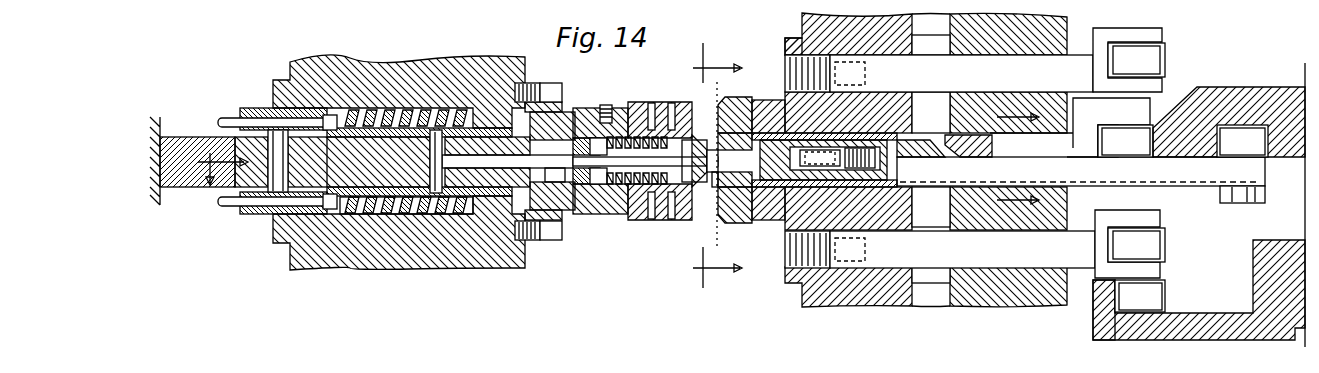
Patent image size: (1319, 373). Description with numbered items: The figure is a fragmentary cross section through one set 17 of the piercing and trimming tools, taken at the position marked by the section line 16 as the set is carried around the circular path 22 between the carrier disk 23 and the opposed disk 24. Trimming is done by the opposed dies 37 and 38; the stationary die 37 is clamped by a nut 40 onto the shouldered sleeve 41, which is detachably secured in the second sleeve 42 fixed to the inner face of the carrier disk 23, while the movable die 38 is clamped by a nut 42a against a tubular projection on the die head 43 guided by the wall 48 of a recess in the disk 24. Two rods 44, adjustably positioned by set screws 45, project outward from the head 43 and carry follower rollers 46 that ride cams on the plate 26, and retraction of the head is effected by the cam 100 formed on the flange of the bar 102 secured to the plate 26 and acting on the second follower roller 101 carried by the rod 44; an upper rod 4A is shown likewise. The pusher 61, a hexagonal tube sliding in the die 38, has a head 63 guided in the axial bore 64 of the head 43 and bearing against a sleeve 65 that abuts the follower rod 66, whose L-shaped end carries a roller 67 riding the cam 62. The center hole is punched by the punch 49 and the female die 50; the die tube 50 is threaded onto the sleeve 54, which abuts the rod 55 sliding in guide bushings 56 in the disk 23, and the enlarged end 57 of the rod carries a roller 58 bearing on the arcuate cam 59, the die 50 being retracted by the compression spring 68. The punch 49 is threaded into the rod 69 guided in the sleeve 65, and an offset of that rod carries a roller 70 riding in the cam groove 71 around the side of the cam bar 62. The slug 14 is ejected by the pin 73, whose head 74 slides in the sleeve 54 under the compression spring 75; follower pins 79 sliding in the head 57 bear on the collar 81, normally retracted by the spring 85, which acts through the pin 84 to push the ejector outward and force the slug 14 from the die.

The slug 14 is at (692, 150).
The section line 16 is at (717, 172).
The set of tools 17 is at (700, 215).
The circular path 22 is at (583, 182).
The carrier disk 23 is at (413, 67).
The disk 24 is at (993, 30).
The plate 26 is at (1305, 72).
The stationary trimming die 37 is at (712, 175).
The movable trimming die 38 is at (715, 190).
The nut 40 is at (668, 102).
The sleeve 41 is at (610, 105).
The second sleeve 42 is at (580, 108).
The nut 42a is at (762, 220).
The die head 43 is at (790, 40).
The rod 44 is at (1078, 231).
The set screw 45 is at (786, 65).
The follower roller 46 is at (1165, 58).
The wall of recess 48 is at (912, 40).
The punch 49 is at (823, 161).
The female die 50 is at (600, 184).
The sleeve 54 is at (556, 140).
The rod 55 is at (492, 137).
The guide bushing 56 is at (278, 108).
The enlarged outer end 57 is at (264, 214).
The roller 58 is at (290, 162).
The arcuate cam 59 is at (207, 137).
The pusher 61 is at (735, 160).
The cam 62 is at (1148, 157).
The head 63 is at (786, 133).
The axial bore 64 is at (828, 148).
The sleeve 65 is at (858, 147).
The follower rod 66 is at (945, 137).
The roller 67 is at (1116, 157).
The compression spring 68 is at (655, 190).
The rod 69 is at (930, 195).
The roller 70 is at (1258, 128).
The cam groove 71 is at (1234, 128).
The ejector pin 73 is at (694, 172).
The head 74 is at (554, 182).
The compression spring 75 is at (536, 190).
The follower pin 79 is at (236, 118).
The collar 81 is at (374, 214).
The pin 84 is at (446, 166).
The spring 85 is at (412, 120).
The cam 100 is at (1098, 302).
The second follower roller 101 is at (1170, 296).
The bar 102 is at (1255, 340).
The upper bolt 4A is at (1078, 66).